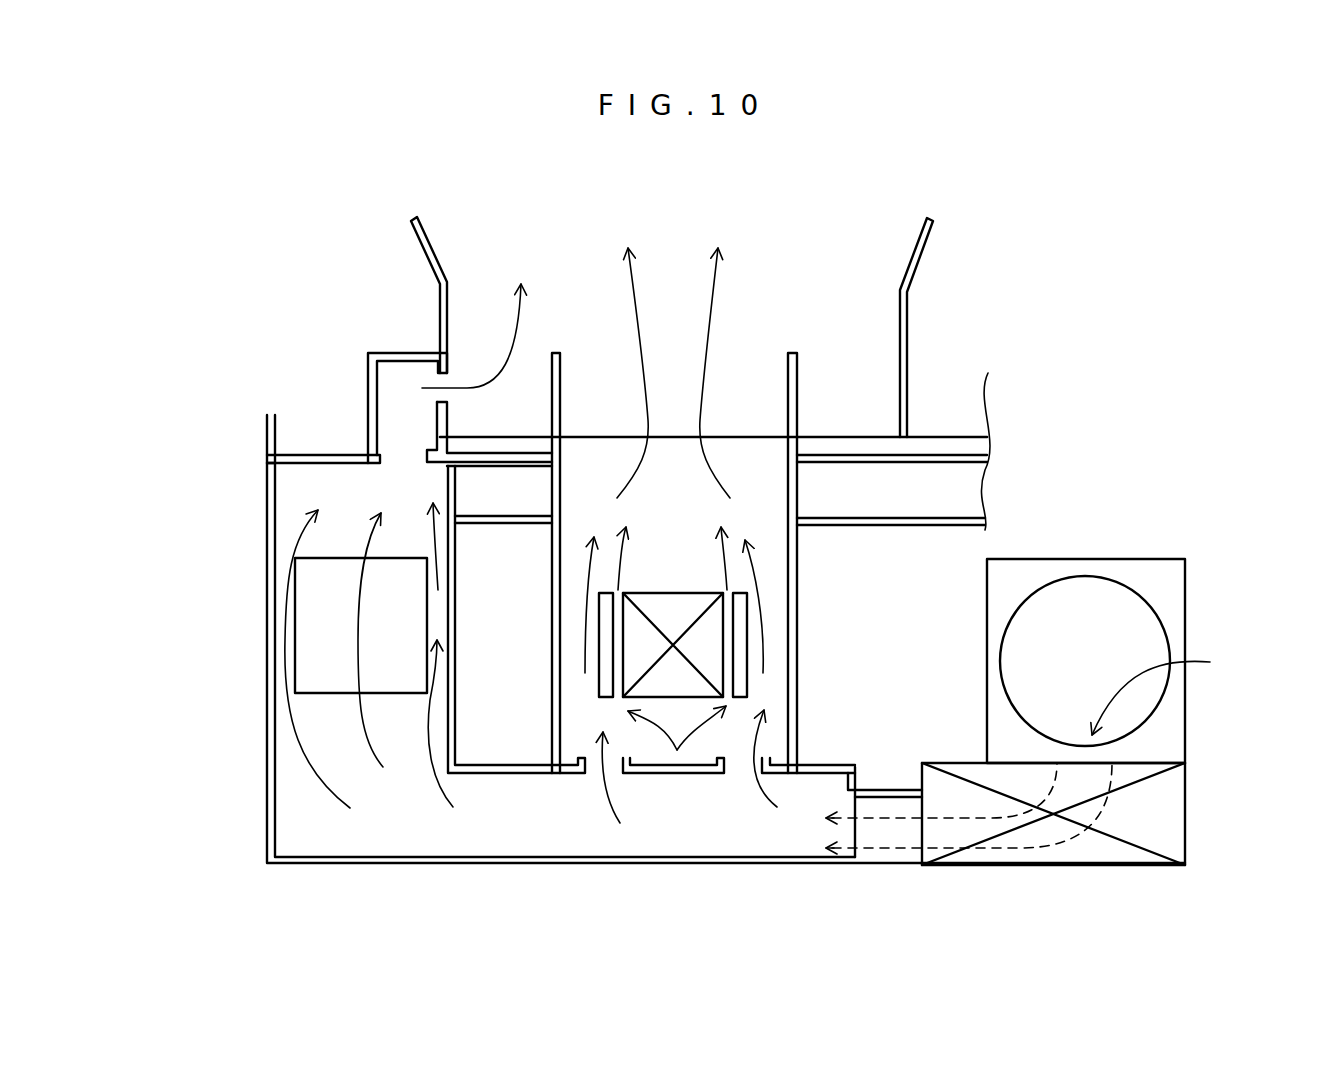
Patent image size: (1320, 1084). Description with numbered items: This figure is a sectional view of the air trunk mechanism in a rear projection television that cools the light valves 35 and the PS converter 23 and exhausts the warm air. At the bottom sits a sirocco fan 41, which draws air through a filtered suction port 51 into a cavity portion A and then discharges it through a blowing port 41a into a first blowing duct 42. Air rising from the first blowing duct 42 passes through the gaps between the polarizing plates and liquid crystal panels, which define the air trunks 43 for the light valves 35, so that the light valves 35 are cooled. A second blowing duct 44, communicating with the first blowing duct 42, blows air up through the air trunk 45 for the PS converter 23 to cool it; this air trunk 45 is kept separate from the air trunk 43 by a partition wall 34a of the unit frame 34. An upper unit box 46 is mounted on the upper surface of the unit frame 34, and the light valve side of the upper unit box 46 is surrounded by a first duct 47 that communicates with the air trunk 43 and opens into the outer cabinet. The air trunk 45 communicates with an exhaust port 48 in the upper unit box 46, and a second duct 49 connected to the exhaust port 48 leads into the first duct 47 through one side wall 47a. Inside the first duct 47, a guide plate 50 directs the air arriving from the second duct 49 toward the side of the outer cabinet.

The PS converter 23 is at (322, 588).
The unit frame 34 is at (448, 745).
The partition wall 34a is at (447, 480).
The light valve 35 is at (677, 750).
The sirocco fan 41 is at (1153, 815).
The blowing port 41a is at (885, 832).
The first blowing duct 42 is at (725, 827).
The air trunk 43 is at (572, 615).
The second blowing duct 44 is at (387, 827).
The air trunk 45 is at (285, 633).
The upper unit box 46 is at (318, 452).
The first duct 47 is at (913, 250).
The side wall 47a is at (450, 300).
The exhaust port 48 is at (407, 458).
The second duct 49 is at (402, 353).
The guide plate 50 is at (537, 393).
The suction port 51 is at (1150, 600).
The cavity portion A is at (1127, 558).